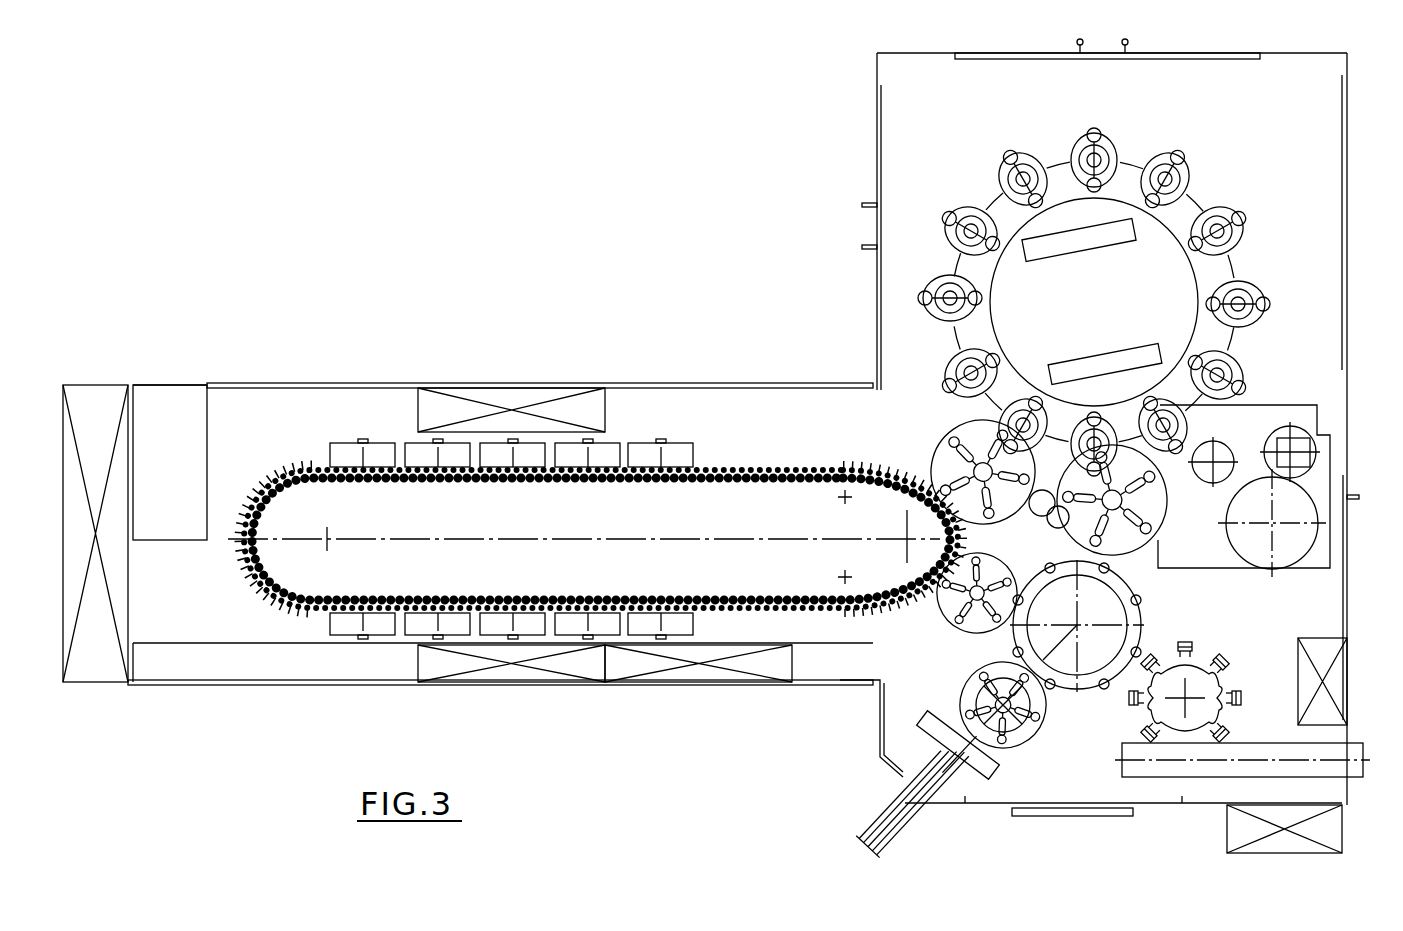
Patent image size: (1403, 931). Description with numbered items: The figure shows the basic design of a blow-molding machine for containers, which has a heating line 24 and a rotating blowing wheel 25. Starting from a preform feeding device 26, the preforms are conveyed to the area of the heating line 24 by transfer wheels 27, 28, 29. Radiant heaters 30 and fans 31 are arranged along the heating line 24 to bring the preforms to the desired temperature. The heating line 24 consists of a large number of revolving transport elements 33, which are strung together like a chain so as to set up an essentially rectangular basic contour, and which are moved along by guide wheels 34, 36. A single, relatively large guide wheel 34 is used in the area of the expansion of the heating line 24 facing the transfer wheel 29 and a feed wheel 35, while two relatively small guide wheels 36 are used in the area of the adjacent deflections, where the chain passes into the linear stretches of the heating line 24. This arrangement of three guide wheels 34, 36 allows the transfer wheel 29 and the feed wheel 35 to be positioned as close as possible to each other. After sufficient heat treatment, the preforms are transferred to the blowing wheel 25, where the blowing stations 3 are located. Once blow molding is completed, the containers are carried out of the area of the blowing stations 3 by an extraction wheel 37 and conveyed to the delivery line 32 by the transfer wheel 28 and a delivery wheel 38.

The blowing station 3 is at (930, 285).
The heating line 24 is at (650, 420).
The blowing wheel 25 is at (990, 224).
The preform feeding device 26 is at (903, 803).
The transfer wheel 27 is at (1017, 745).
The transfer wheel 28 is at (1078, 680).
The transfer wheel 29 is at (937, 636).
The radiant heaters 30 is at (383, 455).
The fans 31 is at (505, 388).
The delivery line 32 is at (1352, 770).
The transport elements 33 is at (290, 605).
The guide wheel 34 is at (330, 535).
The feed wheel 35 is at (935, 432).
The guide wheels 36 is at (805, 470).
The extraction wheel 37 is at (1167, 523).
The delivery wheel 38 is at (1195, 710).